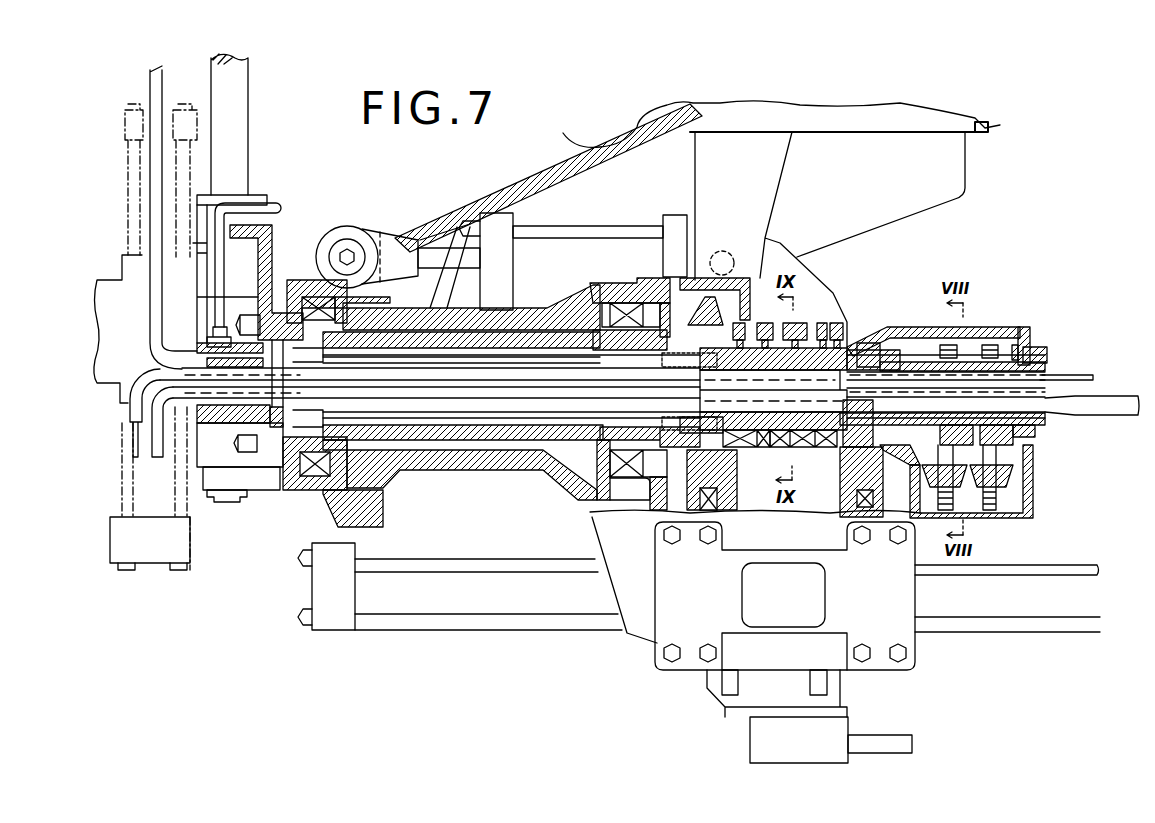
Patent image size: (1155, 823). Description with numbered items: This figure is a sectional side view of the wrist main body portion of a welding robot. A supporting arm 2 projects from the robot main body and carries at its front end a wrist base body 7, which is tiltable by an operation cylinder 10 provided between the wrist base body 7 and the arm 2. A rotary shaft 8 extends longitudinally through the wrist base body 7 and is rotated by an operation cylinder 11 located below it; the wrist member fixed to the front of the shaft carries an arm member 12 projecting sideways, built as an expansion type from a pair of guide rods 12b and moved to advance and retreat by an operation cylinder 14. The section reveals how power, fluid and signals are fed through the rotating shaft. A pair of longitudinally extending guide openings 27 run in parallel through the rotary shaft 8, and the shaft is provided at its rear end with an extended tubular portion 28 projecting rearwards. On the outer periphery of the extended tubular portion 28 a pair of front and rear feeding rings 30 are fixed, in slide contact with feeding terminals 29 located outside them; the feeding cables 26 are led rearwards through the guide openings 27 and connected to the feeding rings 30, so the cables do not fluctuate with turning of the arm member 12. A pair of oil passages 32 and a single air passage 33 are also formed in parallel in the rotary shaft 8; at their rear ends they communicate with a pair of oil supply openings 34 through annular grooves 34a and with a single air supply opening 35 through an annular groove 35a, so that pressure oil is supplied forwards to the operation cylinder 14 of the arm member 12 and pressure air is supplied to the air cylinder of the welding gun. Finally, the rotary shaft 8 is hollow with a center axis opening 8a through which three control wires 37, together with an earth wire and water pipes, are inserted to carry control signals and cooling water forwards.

The supporting arm 2 is at (508, 187).
The wrist base body 7 is at (451, 467).
The rotary shaft 8 is at (501, 437).
The center axis opening 8a is at (562, 425).
The operation cylinder 10 is at (611, 240).
The operation cylinder 11 is at (471, 603).
The arm member 12 is at (255, 93).
The guide rods 12b is at (235, 123).
The operation cylinder 14 is at (141, 194).
The feeding cables 26 is at (421, 387).
The guide openings 27 is at (527, 385).
The extended tubular portion 28 is at (897, 340).
The feeding terminals 29 is at (943, 487).
The feeding rings 30 is at (938, 337).
The oil passages 32 is at (470, 420).
The air passage 33 is at (528, 340).
The oil supply openings 34 is at (793, 322).
The annular grooves 34a is at (808, 447).
The air supply opening 35 is at (762, 322).
The annular groove 35a is at (760, 447).
The control wires 37 is at (1082, 377).